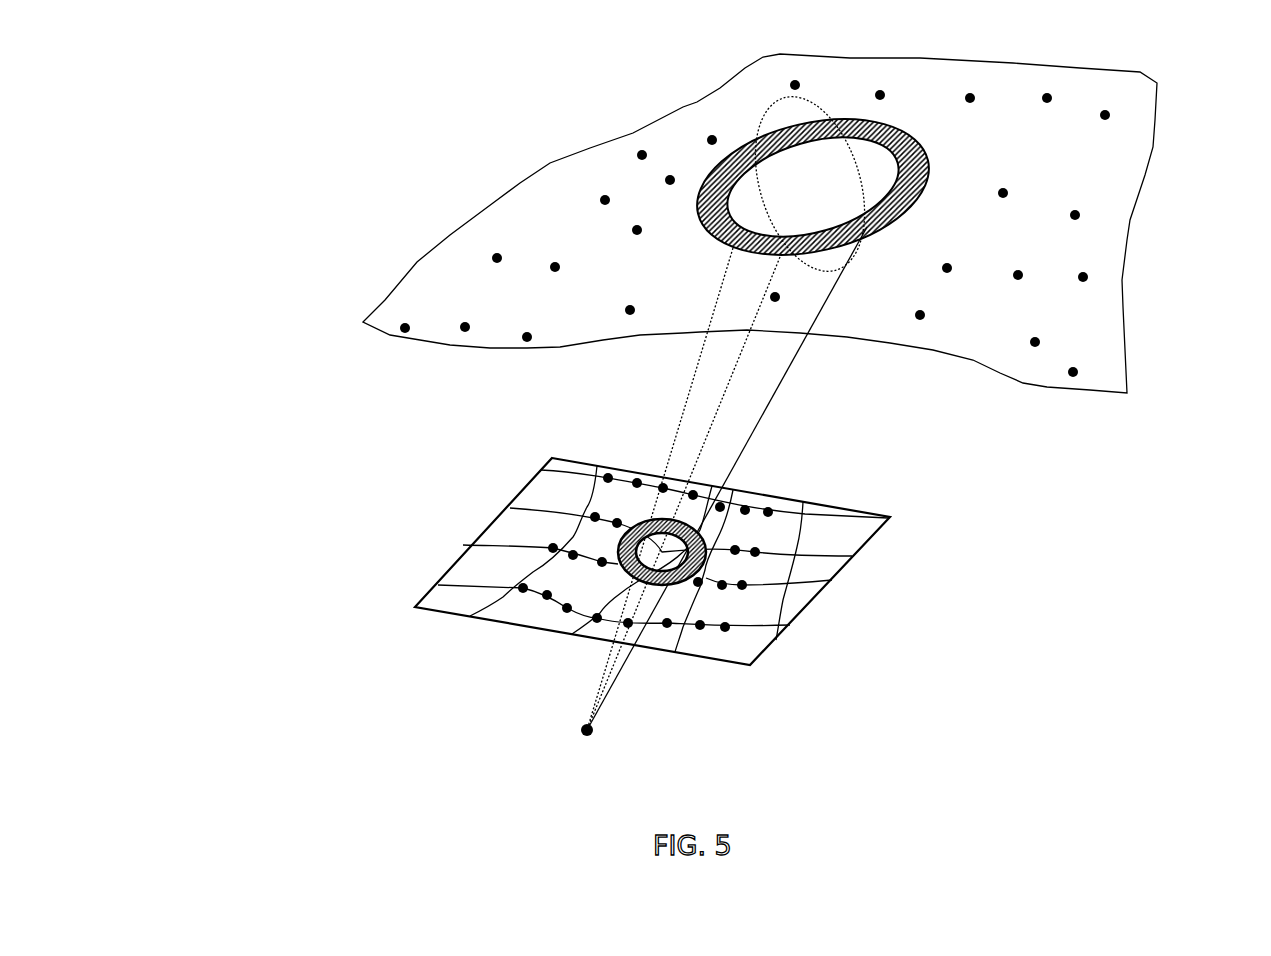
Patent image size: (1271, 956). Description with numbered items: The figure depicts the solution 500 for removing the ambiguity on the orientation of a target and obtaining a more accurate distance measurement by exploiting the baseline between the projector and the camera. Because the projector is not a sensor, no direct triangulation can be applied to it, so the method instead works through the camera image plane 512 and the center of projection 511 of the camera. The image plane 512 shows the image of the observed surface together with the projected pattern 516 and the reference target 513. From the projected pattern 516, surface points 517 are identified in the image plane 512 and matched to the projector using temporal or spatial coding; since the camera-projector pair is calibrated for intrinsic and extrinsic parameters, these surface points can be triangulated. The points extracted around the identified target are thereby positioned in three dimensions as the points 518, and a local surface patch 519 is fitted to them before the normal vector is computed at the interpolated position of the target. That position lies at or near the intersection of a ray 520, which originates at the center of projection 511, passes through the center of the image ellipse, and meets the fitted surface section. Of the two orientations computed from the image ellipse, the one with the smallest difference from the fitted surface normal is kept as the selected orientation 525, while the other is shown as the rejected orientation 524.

The solution 500 is at (398, 142).
The center of projection 511 is at (593, 729).
The image plane 512 is at (463, 550).
The reference target 513 is at (832, 580).
The projected pattern 516 is at (805, 525).
The surface points 517 is at (790, 625).
The points positioned in 3D 518 is at (1018, 275).
The local surface patch 519 is at (963, 333).
The ray 520 is at (723, 402).
The rejected orientation 524 is at (770, 103).
The selected orientation 525 is at (928, 147).